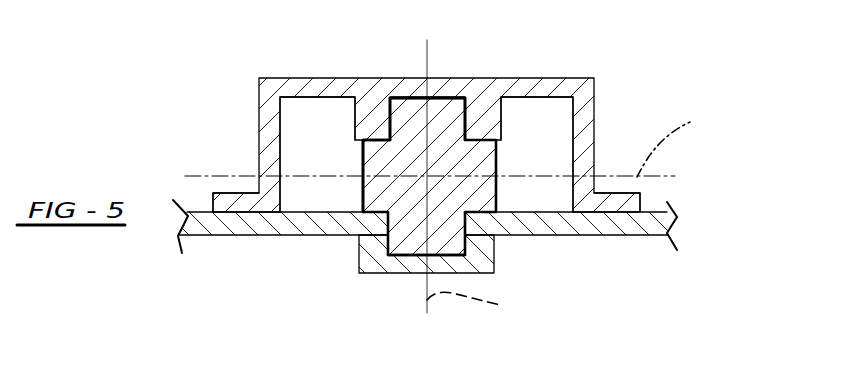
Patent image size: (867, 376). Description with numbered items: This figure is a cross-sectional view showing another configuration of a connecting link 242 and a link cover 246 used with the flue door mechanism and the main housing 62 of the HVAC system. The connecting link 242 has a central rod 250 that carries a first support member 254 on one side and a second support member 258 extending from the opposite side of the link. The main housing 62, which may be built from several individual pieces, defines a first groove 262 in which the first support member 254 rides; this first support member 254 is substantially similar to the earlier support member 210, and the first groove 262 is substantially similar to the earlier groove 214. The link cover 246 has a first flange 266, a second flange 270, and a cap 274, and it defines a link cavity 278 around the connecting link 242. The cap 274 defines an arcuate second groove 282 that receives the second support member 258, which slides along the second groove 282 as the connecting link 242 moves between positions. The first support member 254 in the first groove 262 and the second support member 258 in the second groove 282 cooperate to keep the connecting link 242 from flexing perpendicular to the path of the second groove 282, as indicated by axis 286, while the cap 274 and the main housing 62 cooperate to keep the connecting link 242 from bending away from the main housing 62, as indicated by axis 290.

The main housing 62 is at (217, 230).
The support member 210 is at (233, 0).
The groove 214 is at (117, 11).
The connecting link 242 is at (467, 160).
The link cover 246 is at (259, 98).
The central rod 250 is at (363, 162).
The first support member 254 is at (453, 237).
The second support member 258 is at (450, 123).
The first groove 262 is at (403, 257).
The first flange 266 is at (240, 205).
The second flange 270 is at (622, 205).
The cap 274 is at (553, 83).
The link cavity 278 is at (307, 123).
The second groove 282 is at (408, 97).
The axis 286 is at (686, 141).
The axis 290 is at (481, 305).